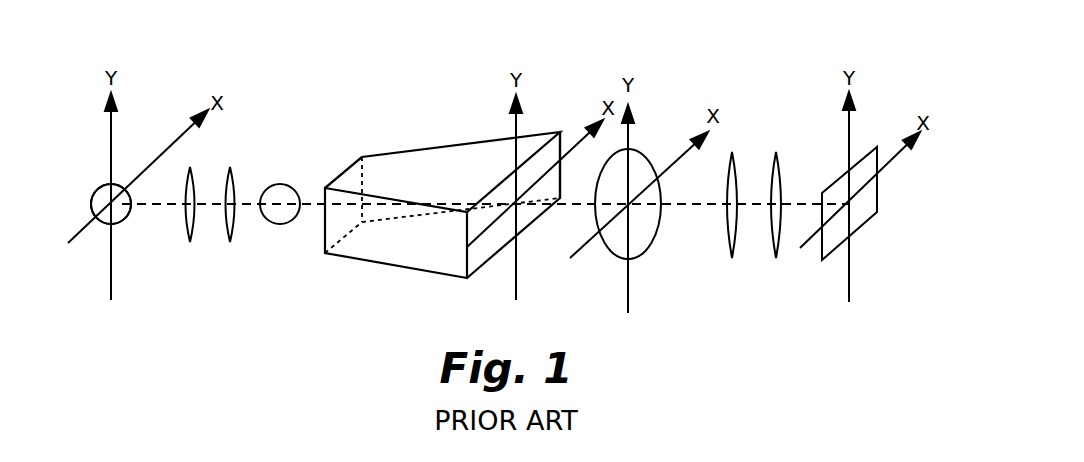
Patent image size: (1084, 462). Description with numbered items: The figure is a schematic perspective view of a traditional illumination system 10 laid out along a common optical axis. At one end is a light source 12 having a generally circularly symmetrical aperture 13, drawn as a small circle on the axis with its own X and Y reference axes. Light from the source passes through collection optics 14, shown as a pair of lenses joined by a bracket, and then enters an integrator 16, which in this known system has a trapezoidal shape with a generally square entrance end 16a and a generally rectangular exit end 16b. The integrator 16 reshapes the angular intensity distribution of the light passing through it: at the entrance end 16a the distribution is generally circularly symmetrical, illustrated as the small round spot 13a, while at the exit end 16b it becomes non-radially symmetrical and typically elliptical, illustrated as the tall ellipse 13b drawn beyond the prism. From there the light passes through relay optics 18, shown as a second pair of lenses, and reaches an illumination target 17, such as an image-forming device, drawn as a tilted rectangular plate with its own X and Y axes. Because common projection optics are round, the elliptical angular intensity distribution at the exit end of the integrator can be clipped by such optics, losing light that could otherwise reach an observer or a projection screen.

The illumination system 10 is at (471, 52).
The light source 12 is at (90, 187).
The circularly symmetrical aperture 13 is at (103, 224).
The circularly symmetrical angular intensity distribution 13a is at (278, 224).
The elliptical angular intensity distribution 13b is at (652, 242).
The collection optics 14 is at (190, 242).
The integrator 16 is at (447, 278).
The entrance end 16a is at (345, 172).
The exit end 16b is at (560, 132).
The illumination target 17 is at (842, 175).
The relay optics 18 is at (732, 152).